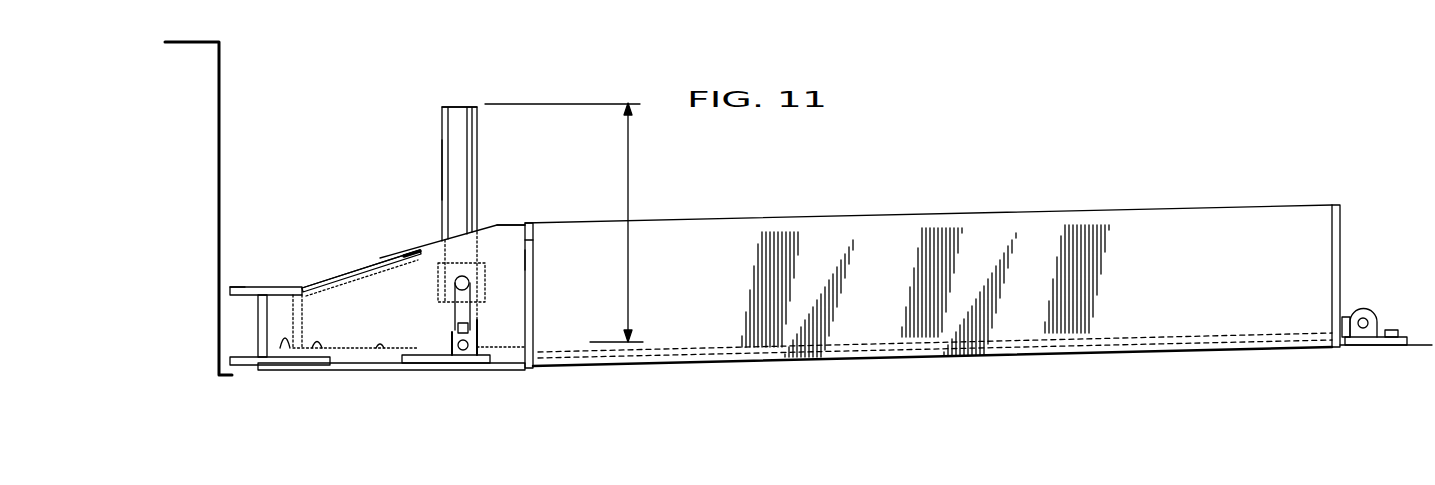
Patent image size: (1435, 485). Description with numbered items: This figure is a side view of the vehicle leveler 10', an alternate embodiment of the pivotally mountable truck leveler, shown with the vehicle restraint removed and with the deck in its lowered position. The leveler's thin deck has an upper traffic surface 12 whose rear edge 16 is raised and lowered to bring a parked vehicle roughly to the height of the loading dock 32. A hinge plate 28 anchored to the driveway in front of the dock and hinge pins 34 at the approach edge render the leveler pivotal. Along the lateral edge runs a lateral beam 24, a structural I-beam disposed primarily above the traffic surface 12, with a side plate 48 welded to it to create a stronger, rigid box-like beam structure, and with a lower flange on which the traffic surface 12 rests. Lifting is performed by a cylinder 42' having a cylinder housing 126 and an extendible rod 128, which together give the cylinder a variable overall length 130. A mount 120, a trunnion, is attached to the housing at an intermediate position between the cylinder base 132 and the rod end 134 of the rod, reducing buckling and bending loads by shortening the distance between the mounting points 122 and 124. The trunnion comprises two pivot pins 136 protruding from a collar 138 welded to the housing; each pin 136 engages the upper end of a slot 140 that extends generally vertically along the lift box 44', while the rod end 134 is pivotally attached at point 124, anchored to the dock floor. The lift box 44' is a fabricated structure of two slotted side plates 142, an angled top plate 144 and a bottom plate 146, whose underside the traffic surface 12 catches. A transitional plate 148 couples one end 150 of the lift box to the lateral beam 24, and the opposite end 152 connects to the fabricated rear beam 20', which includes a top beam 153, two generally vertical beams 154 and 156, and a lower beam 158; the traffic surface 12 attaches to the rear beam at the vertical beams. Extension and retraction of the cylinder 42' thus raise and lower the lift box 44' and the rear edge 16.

The vehicle leveler 10' is at (1172, 252).
The upper traffic surface 12 is at (378, 343).
The rear edge 16 is at (252, 363).
The rear beam 20' is at (347, 265).
The lateral beam 24 is at (725, 220).
The hinge plate 28 is at (1382, 333).
The loading dock 32 is at (220, 207).
The hinge pins 34 is at (1360, 315).
The cylinder 42' is at (416, 155).
The lift box 44' is at (452, 200).
The side plate 48 is at (703, 300).
The mount 120 is at (440, 292).
The mounting point 122 is at (455, 282).
The mounting point 124 is at (470, 340).
The cylinder housing 126 is at (442, 163).
The extendible rod 128 is at (453, 329).
The overall length 130 is at (630, 203).
The cylinder base 132 is at (457, 106).
The rod end 134 is at (463, 352).
The pivot pins 136 is at (508, 258).
The collar 138 is at (425, 262).
The slot 140 is at (457, 303).
The slotted side plates 142 is at (535, 268).
The angled top plate 144 is at (352, 262).
The bottom plate 146 is at (323, 348).
The transitional plate 148 is at (523, 223).
The end of lift box 150 is at (527, 247).
The opposite end of lift box 152 is at (265, 328).
The top beam 153 is at (243, 286).
The vertical beam 154 is at (258, 310).
The vertical beam 156 is at (290, 340).
The lower beam 158 is at (236, 356).